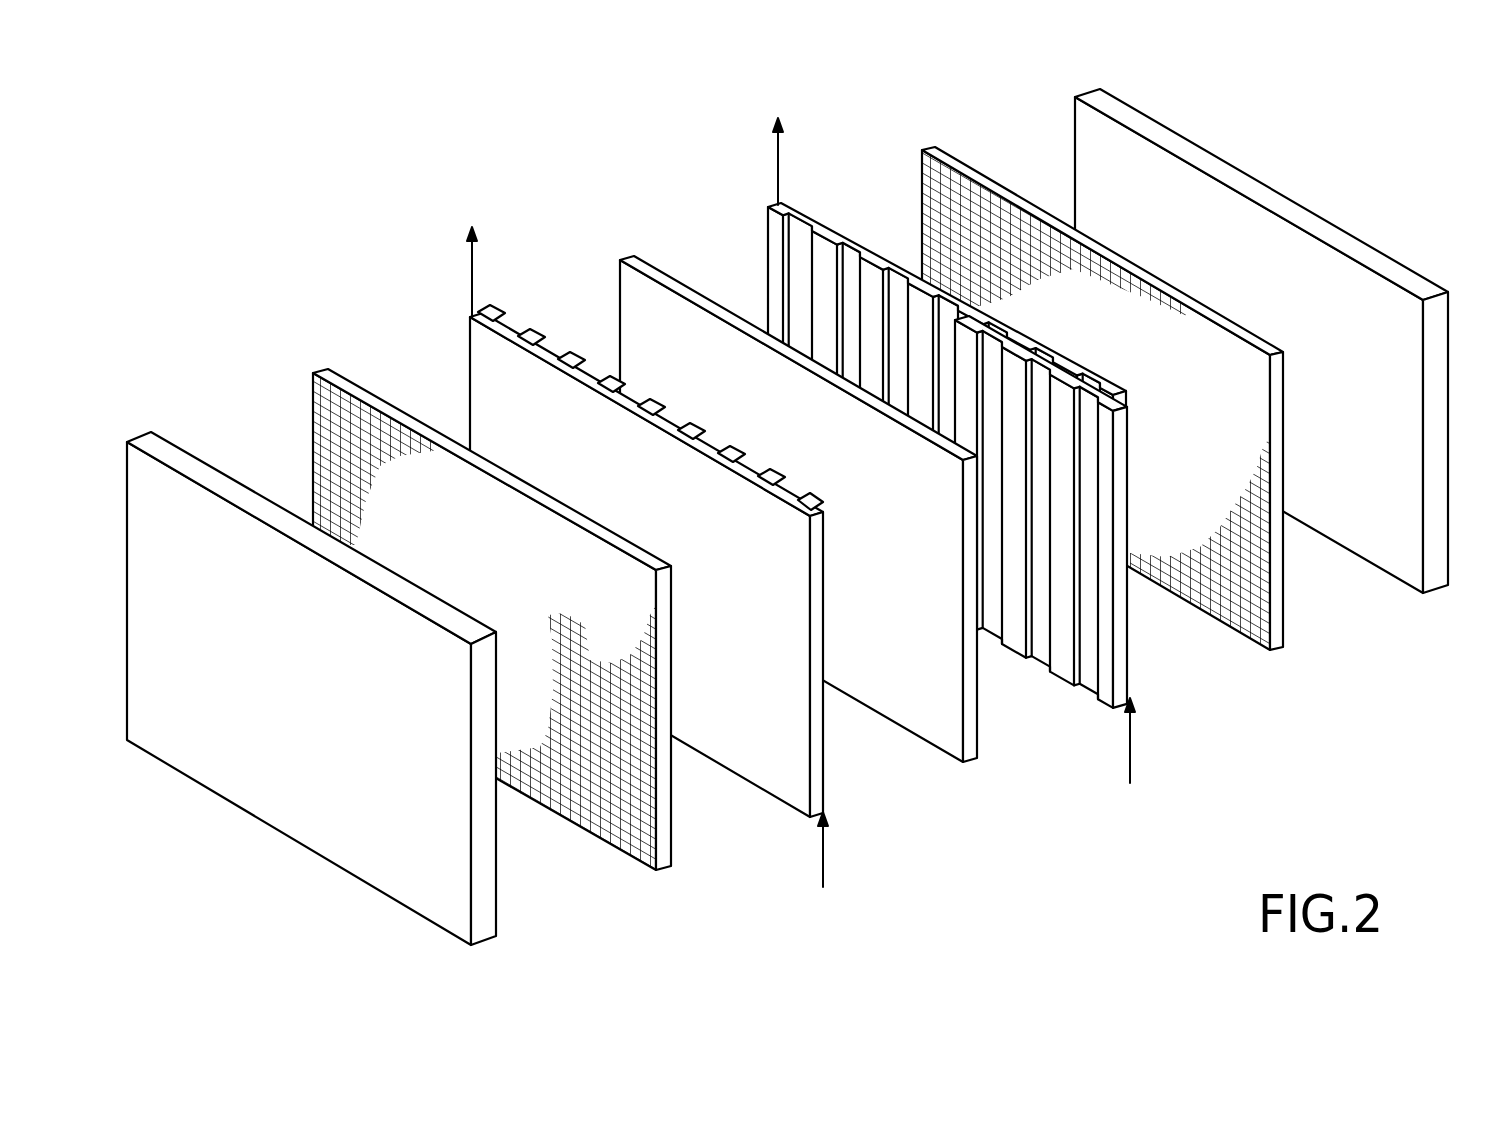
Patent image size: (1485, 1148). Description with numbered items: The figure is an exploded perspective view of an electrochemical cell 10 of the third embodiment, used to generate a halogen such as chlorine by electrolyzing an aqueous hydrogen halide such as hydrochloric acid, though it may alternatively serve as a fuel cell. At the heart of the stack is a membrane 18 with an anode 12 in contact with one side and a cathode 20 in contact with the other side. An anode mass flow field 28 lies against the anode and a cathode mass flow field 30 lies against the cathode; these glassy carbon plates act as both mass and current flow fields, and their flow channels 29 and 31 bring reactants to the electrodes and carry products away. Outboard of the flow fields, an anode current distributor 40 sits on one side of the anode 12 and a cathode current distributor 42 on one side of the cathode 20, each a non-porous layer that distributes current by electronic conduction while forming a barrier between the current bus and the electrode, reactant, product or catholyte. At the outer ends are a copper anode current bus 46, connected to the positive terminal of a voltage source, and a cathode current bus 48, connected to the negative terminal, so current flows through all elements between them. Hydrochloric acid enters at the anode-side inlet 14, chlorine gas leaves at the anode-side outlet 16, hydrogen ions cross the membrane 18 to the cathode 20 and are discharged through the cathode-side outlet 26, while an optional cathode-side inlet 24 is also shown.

The electrochemical cell 10 is at (787, 517).
The anode 12 is at (803, 498).
The anode-side inlet 14 is at (821, 860).
The anode-side outlet 16 is at (471, 270).
The membrane 18 is at (803, 479).
The cathode 20 is at (980, 712).
The cathode-side inlet 24 is at (1133, 752).
The cathode-side outlet 26 is at (777, 158).
The anode mass flow field 28 is at (599, 550).
The flow channels 29 is at (511, 330).
The cathode mass flow field 30 is at (1133, 652).
The flow channels 31 is at (801, 235).
The anode current distributor 40 is at (321, 364).
The cathode current distributor 42 is at (1283, 608).
The anode current bus 46 is at (301, 847).
The cathode current bus 48 is at (1283, 203).